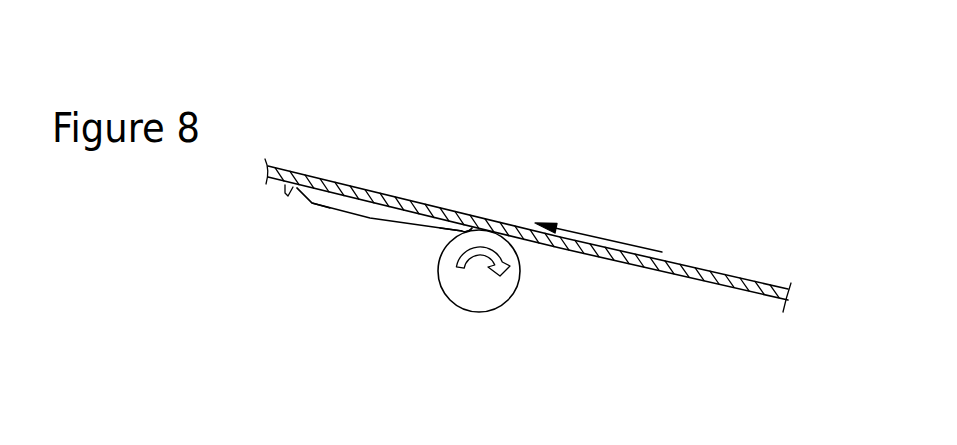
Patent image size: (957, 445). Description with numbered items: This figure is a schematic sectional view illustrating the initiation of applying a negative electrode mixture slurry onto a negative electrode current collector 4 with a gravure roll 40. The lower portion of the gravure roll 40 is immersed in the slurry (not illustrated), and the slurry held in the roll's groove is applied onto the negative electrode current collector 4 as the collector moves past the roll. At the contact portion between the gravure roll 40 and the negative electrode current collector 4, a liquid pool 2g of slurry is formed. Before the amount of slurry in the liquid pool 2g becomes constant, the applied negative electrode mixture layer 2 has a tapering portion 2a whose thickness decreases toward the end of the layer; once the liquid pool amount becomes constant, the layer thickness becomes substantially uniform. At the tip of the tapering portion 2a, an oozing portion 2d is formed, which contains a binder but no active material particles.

The negative electrode current collector 4 is at (427, 202).
The gravure roll 40 is at (512, 295).
The negative electrode mixture layer 2 is at (356, 217).
The tapering portion 2a is at (303, 193).
The oozing portion 2d is at (281, 188).
The liquid pool 2g is at (445, 235).